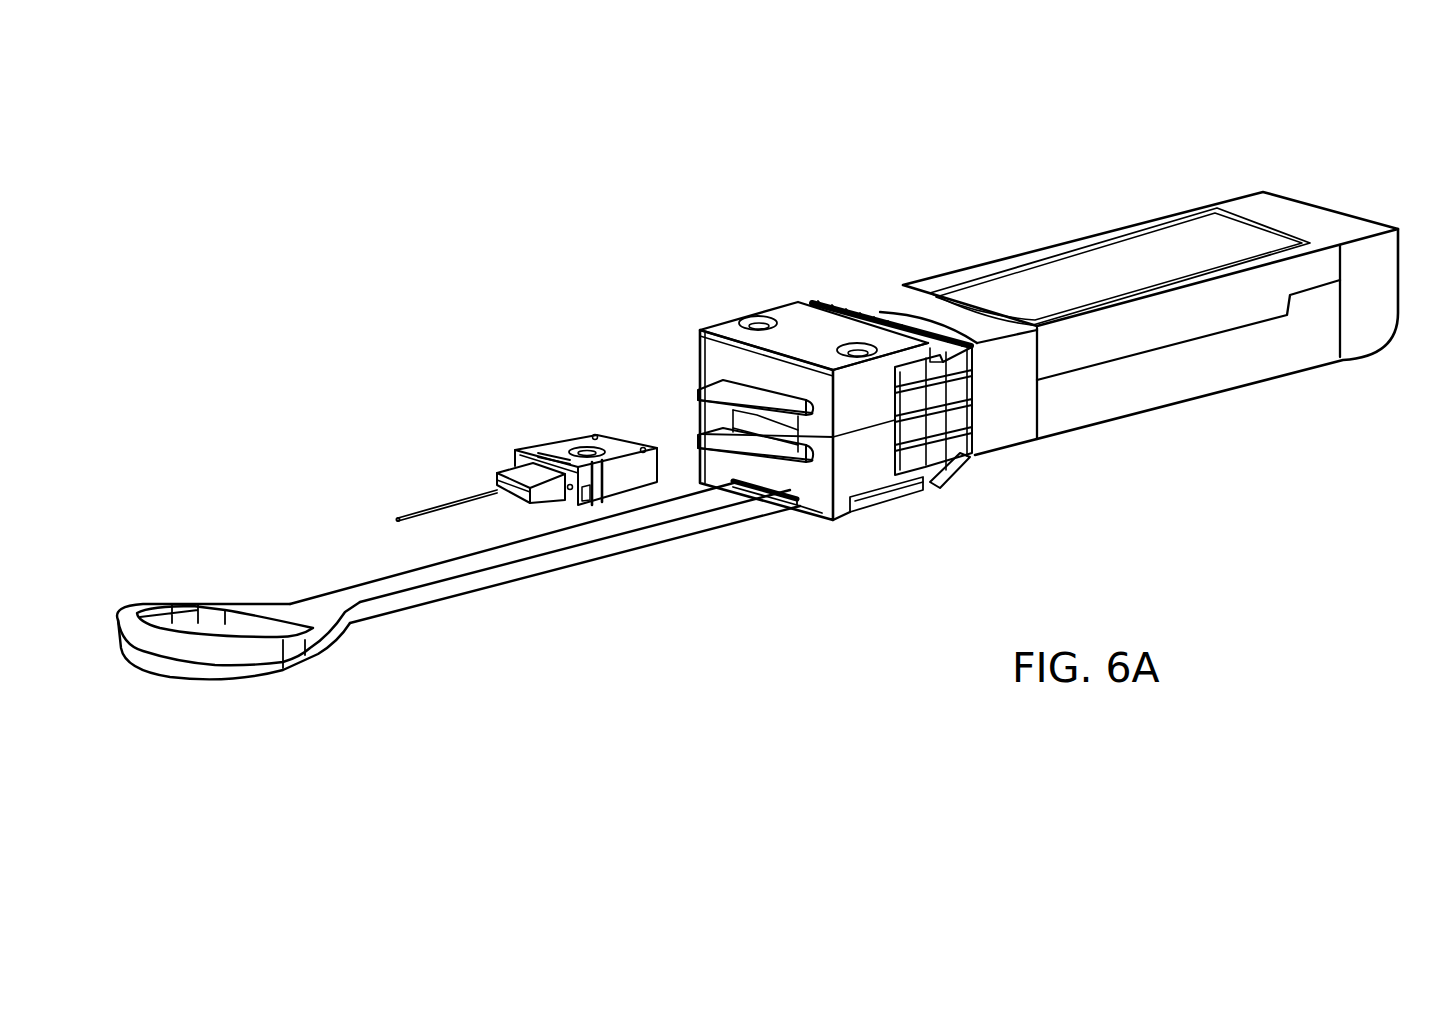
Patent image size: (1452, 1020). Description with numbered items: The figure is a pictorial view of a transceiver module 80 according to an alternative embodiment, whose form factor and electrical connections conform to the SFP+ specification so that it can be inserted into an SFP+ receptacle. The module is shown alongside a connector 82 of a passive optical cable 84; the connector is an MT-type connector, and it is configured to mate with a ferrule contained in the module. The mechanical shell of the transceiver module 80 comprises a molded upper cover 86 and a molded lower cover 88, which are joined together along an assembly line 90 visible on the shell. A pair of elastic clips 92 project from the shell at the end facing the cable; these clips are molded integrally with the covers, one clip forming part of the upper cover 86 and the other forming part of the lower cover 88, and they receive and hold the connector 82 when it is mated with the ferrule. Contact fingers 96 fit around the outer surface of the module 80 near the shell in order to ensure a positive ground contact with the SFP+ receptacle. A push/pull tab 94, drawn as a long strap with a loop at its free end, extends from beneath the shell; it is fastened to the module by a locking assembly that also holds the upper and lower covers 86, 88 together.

The transceiver module 80 is at (1378, 158).
The connector 82 is at (572, 443).
The passive optical cable 84 is at (462, 500).
The upper cover 86 is at (793, 313).
The lower cover 88 is at (845, 485).
The assembly line 90 is at (860, 437).
The elastic clips 92 is at (707, 437).
The push/pull tab 94 is at (412, 587).
The contact fingers 96 is at (957, 450).